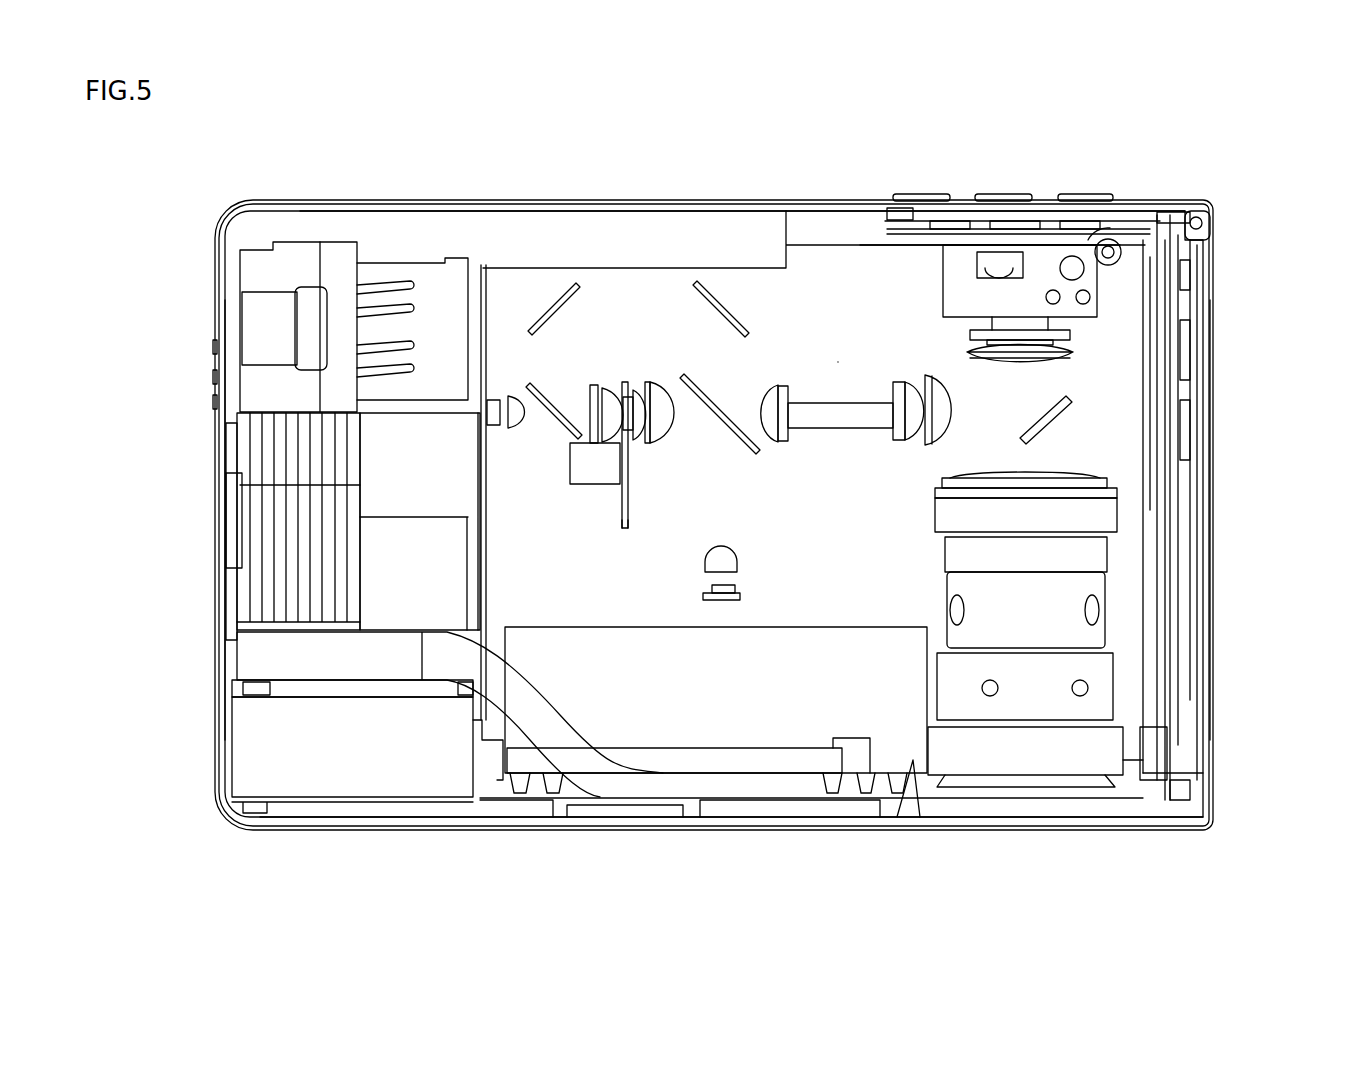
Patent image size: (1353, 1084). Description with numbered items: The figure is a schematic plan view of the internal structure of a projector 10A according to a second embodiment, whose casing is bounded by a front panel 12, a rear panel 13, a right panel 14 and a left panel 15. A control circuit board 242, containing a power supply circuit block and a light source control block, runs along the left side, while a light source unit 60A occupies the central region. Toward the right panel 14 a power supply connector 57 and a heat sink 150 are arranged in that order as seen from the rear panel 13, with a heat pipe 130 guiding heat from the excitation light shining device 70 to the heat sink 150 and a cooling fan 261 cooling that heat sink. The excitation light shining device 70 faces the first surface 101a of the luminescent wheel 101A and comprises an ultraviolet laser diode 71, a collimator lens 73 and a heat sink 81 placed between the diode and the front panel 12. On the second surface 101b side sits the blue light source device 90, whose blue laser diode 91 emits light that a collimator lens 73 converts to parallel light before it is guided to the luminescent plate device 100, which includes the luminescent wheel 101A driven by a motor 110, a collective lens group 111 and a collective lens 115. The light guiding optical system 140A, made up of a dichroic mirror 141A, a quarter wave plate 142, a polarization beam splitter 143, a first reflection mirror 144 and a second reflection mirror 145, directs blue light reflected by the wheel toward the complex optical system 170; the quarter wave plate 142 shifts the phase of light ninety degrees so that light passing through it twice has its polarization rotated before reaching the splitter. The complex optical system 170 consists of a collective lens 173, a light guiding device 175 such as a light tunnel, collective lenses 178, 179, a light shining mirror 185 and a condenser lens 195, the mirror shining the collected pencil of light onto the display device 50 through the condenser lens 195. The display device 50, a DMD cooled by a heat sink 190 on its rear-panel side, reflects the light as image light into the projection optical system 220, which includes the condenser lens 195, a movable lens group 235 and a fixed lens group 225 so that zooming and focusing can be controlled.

The projector 10A is at (1226, 203).
The front panel 12 is at (340, 831).
The rear panel 13 is at (330, 198).
The right panel 14 is at (224, 487).
The left panel 15 is at (1210, 525).
The display device 50 is at (1080, 342).
The power supply connector 57 is at (292, 258).
The light source unit 60A is at (603, 612).
The excitation light shining device 70 is at (698, 611).
The ultraviolet laser diode 71 is at (720, 600).
The collimator lens 73 is at (512, 396).
The heat sink 81 is at (912, 762).
The blue light source device 90 is at (489, 394).
The blue laser diode 91 is at (478, 410).
The luminescent plate device 100 is at (541, 496).
The luminescent wheel 101A is at (622, 502).
The first surface 101a is at (628, 525).
The second surface 101b is at (623, 525).
The motor 110 is at (570, 462).
The collective lens group 111 is at (643, 368).
The collective lens 115 is at (612, 390).
The heat pipe 130 is at (262, 655).
The light guiding optical system 140A is at (691, 264).
The dichroic mirror 141A is at (733, 436).
The quarter wave plate 142 is at (593, 385).
The polarization beam splitter 143 is at (528, 386).
The first reflection mirror 144 is at (551, 305).
The second reflection mirror 145 is at (725, 307).
The heat sink 150 is at (397, 483).
The complex optical system 170 is at (846, 353).
The collective lens 173 is at (774, 438).
The light guiding device 175 is at (840, 430).
The collective lens 178 is at (904, 383).
The collective lens 179 is at (944, 383).
The light shining mirror 185 is at (1068, 423).
The heat sink 190 is at (1035, 260).
The condenser lens 195 is at (1063, 362).
The projection optical system 220 is at (1125, 610).
The fixed lens group 225 is at (1052, 745).
The movable lens group 235 is at (1088, 550).
The control circuit board 242 is at (1189, 680).
The cooling fan 261 is at (292, 748).